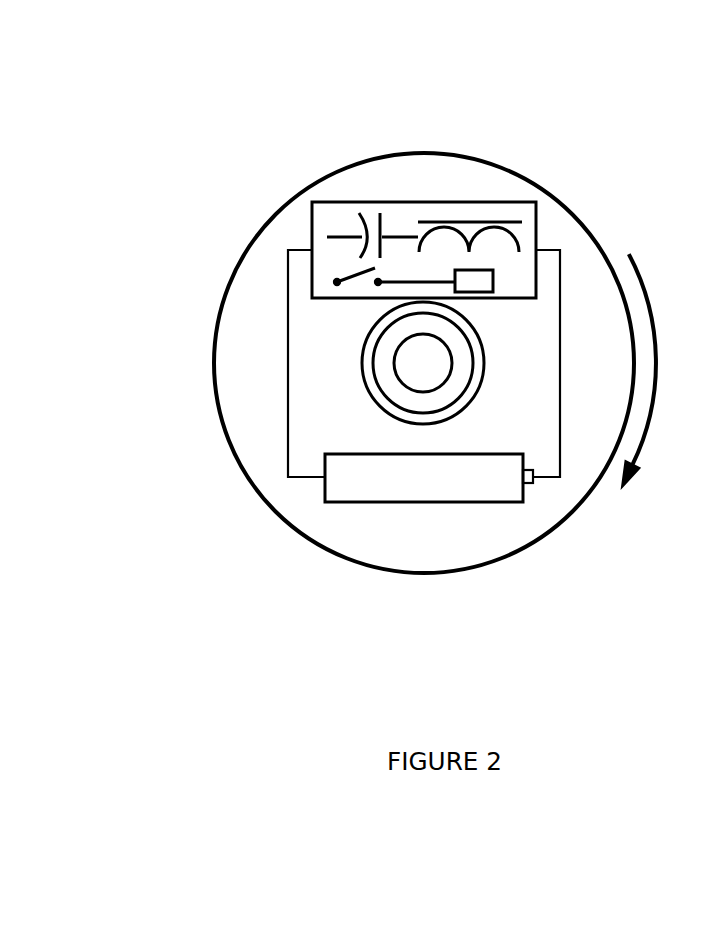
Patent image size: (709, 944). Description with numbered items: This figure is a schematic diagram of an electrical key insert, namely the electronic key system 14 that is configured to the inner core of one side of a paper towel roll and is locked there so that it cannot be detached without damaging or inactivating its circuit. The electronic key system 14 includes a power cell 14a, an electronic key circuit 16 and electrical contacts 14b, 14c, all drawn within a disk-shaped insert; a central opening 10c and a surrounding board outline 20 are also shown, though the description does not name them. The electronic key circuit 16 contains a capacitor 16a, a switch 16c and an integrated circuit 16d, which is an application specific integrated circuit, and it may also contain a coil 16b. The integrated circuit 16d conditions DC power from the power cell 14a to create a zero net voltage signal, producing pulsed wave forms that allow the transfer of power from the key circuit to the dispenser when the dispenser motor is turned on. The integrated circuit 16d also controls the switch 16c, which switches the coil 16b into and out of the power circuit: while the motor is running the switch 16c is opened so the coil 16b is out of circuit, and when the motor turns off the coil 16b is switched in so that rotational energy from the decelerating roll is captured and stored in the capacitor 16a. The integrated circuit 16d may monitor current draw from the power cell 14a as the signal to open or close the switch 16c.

The electronic key system 14 is at (356, 610).
The power cell 14a is at (468, 470).
The electrical contact 14b is at (398, 414).
The electrical contact 14c is at (362, 365).
The central shaft 10c is at (397, 362).
The electronic key circuit 16 is at (510, 202).
The capacitor 16a is at (370, 217).
The coil 16b is at (497, 225).
The switch 16c is at (337, 282).
The integrated circuit 16d is at (495, 280).
The circuit board 20 is at (328, 217).